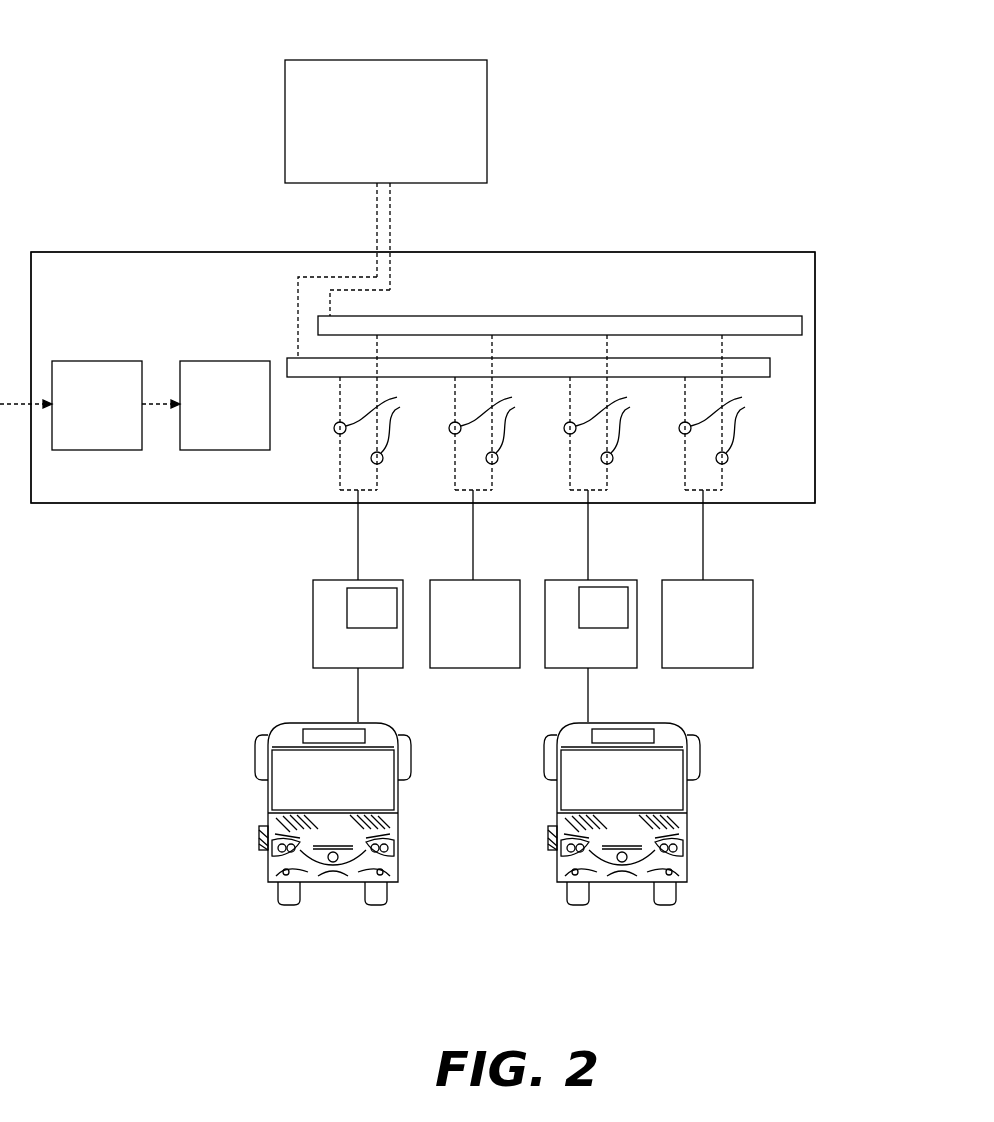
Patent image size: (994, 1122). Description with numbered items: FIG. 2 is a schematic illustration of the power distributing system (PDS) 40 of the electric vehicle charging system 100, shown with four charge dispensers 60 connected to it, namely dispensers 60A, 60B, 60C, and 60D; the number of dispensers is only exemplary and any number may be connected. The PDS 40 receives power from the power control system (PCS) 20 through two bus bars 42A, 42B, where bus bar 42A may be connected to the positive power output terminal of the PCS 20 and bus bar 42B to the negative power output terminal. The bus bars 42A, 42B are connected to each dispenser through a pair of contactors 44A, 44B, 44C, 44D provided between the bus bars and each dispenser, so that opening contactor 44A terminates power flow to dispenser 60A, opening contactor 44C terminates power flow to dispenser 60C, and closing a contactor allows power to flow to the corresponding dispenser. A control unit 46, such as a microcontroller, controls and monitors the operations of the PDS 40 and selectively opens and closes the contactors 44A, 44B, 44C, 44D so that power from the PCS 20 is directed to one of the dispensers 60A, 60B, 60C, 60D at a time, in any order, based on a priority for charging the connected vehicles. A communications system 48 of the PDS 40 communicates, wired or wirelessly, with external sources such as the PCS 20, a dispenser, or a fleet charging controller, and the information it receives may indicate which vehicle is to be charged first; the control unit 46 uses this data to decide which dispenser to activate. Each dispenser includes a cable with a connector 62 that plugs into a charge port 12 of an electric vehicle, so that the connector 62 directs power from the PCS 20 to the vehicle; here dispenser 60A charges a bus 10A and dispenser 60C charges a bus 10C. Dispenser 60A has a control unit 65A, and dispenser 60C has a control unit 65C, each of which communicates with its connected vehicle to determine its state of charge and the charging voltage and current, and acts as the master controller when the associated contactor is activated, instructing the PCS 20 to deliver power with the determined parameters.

The electric vehicle charging system 100 is at (138, 76).
The power control system 20 is at (386, 175).
The power distributing system 40 is at (709, 252).
The bus bar 42A is at (802, 326).
The bus bar 42B is at (770, 368).
The contactor 44A is at (388, 457).
The contactor 44B is at (503, 457).
The contactor 44C is at (618, 457).
The contactor 44D is at (734, 457).
The control unit 46 is at (206, 405).
The communications system 48 is at (71, 405).
The charge dispenser 60 is at (258, 632).
The charge dispenser 60A is at (316, 580).
The charge dispenser 60B is at (475, 624).
The charge dispenser 60C is at (566, 580).
The charge dispenser 60D is at (707, 624).
The control unit 65A is at (372, 608).
The control unit 65C is at (603, 607).
The electric vehicle 10A is at (230, 845).
The electric vehicle 10C is at (689, 868).
The charge port 12 is at (266, 854).
The connector 62 is at (266, 822).